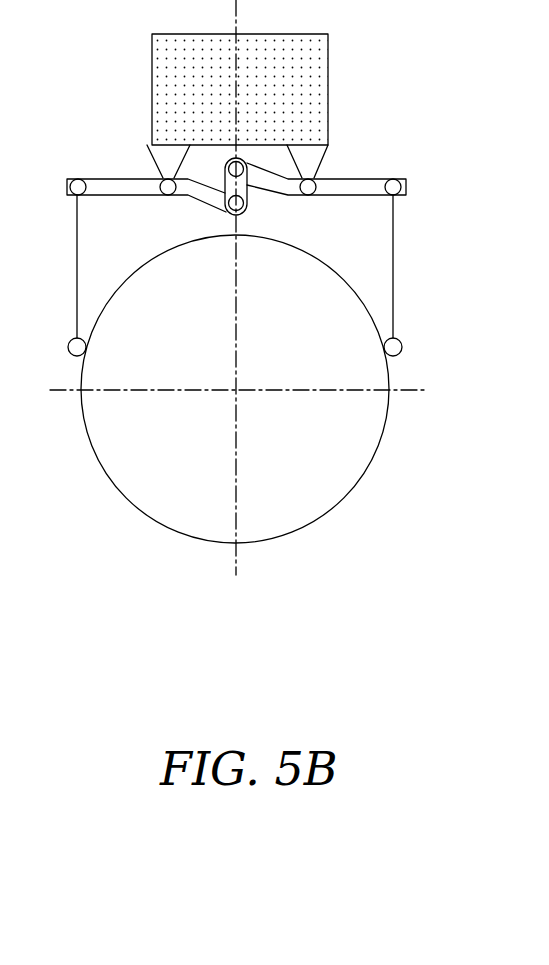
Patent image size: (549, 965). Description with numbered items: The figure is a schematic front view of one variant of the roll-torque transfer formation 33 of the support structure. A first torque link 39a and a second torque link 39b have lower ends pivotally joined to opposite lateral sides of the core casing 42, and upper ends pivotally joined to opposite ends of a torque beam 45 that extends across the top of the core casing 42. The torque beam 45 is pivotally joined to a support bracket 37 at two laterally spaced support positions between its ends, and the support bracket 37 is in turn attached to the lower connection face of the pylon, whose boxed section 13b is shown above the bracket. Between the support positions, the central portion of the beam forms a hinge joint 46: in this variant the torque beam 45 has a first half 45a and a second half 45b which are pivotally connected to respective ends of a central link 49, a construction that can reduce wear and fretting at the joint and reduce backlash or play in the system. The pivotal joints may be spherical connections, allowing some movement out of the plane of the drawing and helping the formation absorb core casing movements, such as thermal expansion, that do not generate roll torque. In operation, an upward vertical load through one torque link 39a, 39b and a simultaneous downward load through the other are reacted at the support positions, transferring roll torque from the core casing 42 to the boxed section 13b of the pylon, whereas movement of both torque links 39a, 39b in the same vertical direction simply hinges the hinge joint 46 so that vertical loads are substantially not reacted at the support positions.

The roll-torque transfer formation 33 is at (33, 146).
The boxed section 13b is at (287, 84).
The support bracket 37 is at (148, 150).
The first half 45a is at (106, 188).
The second half 45b is at (377, 186).
The torque beam 45 is at (305, 204).
The hinge joint 46 is at (252, 154).
The central link 49 is at (242, 192).
The first torque link 39a is at (80, 212).
The second torque link 39b is at (393, 273).
The core casing 42 is at (356, 485).